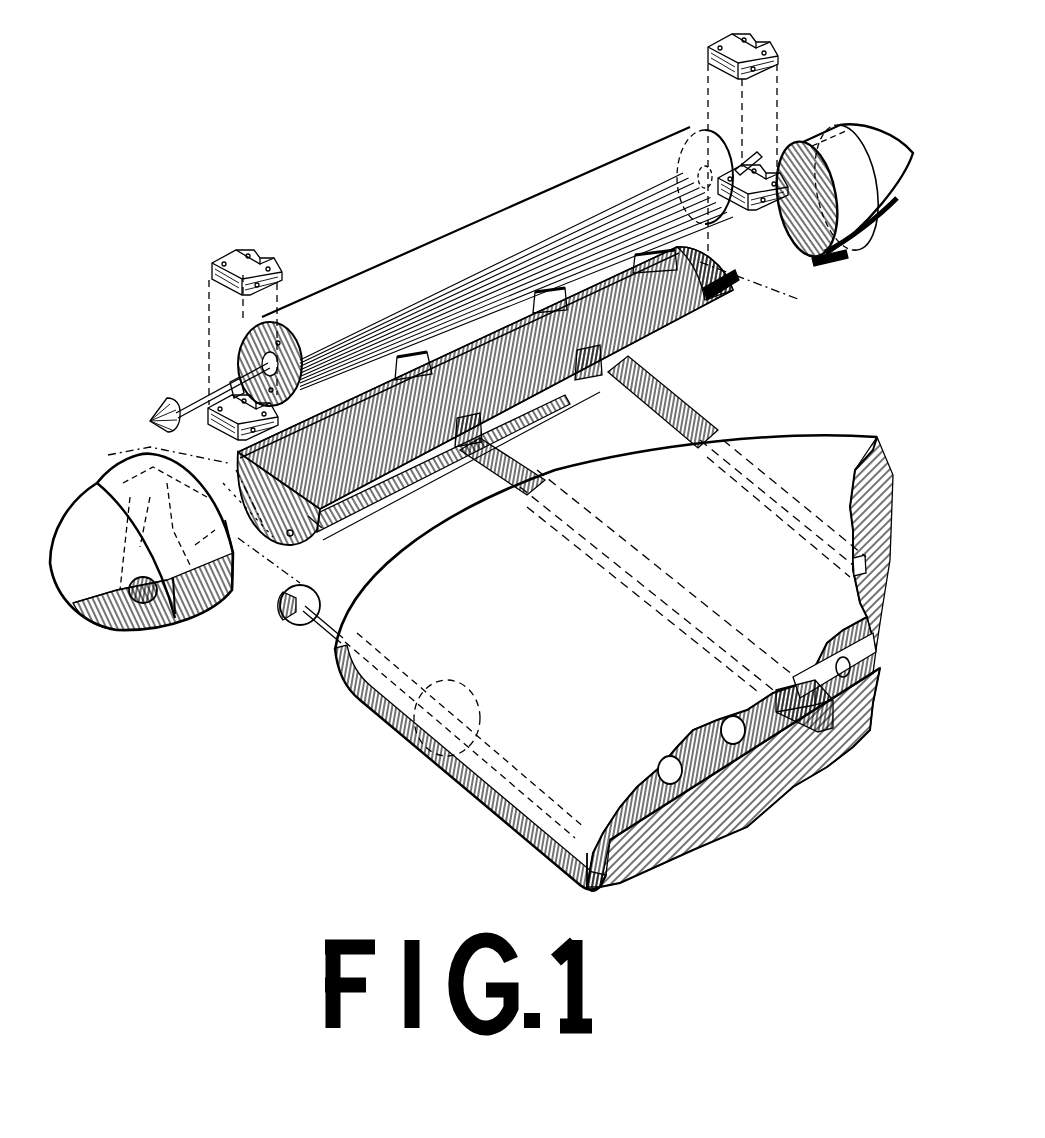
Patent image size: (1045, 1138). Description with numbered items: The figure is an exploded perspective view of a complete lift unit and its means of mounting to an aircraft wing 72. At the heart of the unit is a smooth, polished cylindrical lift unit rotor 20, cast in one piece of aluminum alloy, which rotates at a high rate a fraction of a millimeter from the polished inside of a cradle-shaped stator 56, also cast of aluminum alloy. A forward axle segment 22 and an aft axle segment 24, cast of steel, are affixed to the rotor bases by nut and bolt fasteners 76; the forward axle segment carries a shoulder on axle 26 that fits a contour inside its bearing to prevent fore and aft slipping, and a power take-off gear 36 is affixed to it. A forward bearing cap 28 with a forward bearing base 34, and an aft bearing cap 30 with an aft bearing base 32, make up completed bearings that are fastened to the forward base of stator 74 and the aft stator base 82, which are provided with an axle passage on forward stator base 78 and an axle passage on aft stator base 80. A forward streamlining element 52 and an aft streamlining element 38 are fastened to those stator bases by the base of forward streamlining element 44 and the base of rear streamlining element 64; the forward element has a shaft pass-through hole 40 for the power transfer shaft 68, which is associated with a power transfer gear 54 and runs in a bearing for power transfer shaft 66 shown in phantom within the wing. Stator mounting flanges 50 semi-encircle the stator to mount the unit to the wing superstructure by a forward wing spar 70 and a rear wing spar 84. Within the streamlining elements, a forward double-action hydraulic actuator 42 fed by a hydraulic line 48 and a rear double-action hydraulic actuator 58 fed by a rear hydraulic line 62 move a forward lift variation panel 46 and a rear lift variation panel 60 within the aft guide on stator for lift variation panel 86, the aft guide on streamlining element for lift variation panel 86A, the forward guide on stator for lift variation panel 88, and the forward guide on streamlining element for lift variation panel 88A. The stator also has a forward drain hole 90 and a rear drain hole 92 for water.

The lift unit rotor 20 is at (483, 223).
The forward axle segment 22 is at (191, 406).
The aft axle segment 24 is at (742, 153).
The shoulder on axle 26 is at (234, 382).
The forward bearing cap 28 is at (253, 258).
The aft bearing cap 30 is at (757, 43).
The aft bearing base 32 is at (757, 184).
The forward bearing base 34 is at (218, 424).
The power take-off gear 36 is at (147, 404).
The aft streamlining element 38 is at (878, 138).
The shaft pass-through hole 40 is at (150, 605).
The forward double-action hydraulic actuator 42 is at (114, 627).
The base of forward streamlining element 44 is at (234, 589).
The forward lift variation panel 46 is at (105, 477).
The hydraulic line 48 is at (222, 601).
The stator mounting flanges 50 is at (463, 432).
The forward streamlining element 52 is at (71, 510).
The power transfer gear 54 is at (279, 618).
The stator 56 is at (423, 470).
The rear double-action hydraulic actuator 58 is at (820, 150).
The rear lift variation panel 60 is at (862, 238).
The rear hydraulic line 62 is at (851, 250).
The base of rear streamlining element 64 is at (818, 262).
The bearing for power transfer shaft 66 is at (440, 717).
The power transfer shaft 68 is at (602, 889).
The forward wing spar 70 is at (807, 725).
The aircraft wing 72 is at (410, 641).
The forward base of stator 74 is at (330, 521).
The nut and bolt fasteners 76 is at (317, 520).
The axle passage on forward stator base 78 is at (357, 421).
The axle passage on aft stator base 80 is at (712, 266).
The aft stator base 82 is at (740, 277).
The rear wing spar 84 is at (644, 412).
The aft guide on stator for lift variation panel 86 is at (720, 300).
The aft guide on streamlining element for lift variation panel 86A is at (846, 262).
The forward guide on stator for lift variation panel 88 is at (372, 489).
The forward guide on streamlining element for lift variation panel 88A is at (177, 612).
The forward drain hole 90 is at (292, 536).
The rear drain hole 92 is at (703, 312).